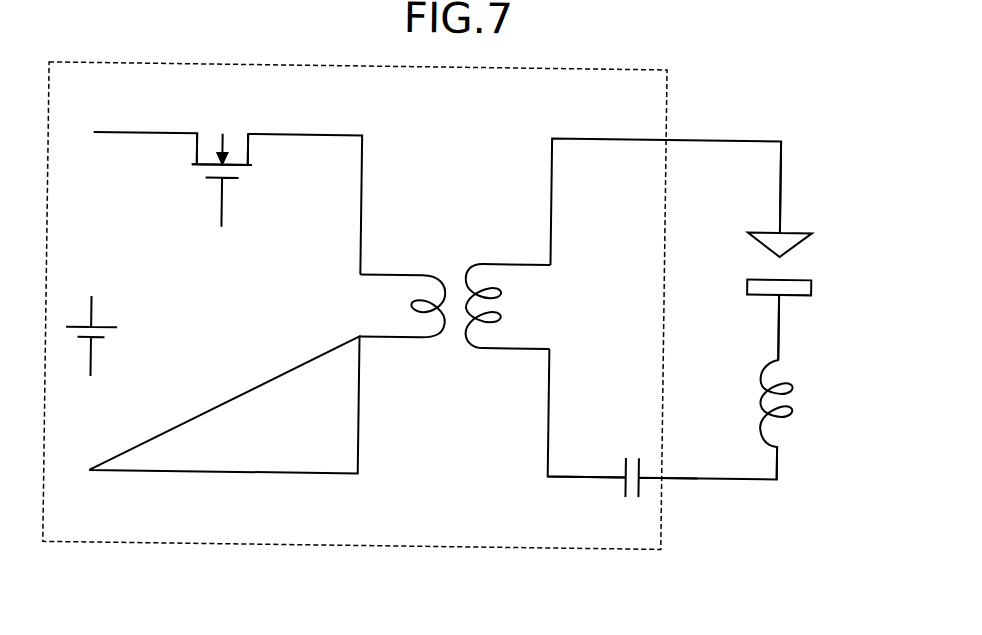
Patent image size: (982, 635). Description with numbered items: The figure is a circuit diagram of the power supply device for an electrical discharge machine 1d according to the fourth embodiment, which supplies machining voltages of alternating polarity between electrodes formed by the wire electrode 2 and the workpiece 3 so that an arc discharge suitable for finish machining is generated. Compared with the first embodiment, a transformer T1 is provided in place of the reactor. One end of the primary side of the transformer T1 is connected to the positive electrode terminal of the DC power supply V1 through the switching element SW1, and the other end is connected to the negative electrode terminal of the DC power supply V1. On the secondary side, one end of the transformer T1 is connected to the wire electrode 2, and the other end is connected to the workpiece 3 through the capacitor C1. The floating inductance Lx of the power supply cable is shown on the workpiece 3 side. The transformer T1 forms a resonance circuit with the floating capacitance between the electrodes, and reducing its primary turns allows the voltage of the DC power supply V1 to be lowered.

The power supply device for an electrical discharge machine 1d is at (463, 547).
The switching element SW1 is at (226, 136).
The DC power supply V1 is at (105, 331).
The transformer T1 is at (419, 338).
The wire electrode 2 is at (789, 228).
The workpiece 3 is at (812, 283).
The floating inductance Lx is at (790, 383).
The capacitor C1 is at (624, 485).